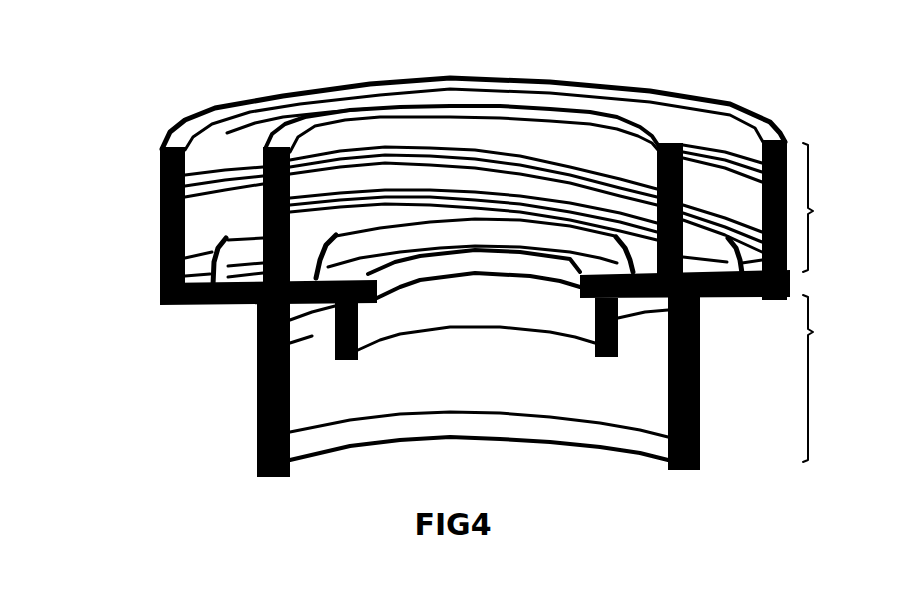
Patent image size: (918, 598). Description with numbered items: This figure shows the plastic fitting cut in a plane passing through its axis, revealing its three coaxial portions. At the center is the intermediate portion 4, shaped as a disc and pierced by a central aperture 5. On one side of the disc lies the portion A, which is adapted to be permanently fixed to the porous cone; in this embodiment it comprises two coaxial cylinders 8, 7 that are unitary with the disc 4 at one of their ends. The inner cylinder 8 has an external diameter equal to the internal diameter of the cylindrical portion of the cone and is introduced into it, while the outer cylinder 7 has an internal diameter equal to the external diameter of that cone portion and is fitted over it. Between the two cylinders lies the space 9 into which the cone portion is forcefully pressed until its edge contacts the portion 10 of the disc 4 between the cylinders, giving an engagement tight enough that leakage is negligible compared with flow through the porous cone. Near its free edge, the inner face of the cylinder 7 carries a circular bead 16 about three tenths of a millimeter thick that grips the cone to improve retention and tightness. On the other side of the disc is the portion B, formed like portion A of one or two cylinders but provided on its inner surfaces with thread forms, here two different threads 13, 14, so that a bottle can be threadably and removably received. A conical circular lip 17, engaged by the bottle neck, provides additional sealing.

The thread 13 is at (203, 160).
The thread 14 is at (300, 156).
The aperture 5 is at (479, 258).
The conical circular lip 17 is at (160, 265).
The intermediate portion 4 is at (163, 302).
The cylinder 8 is at (255, 333).
The space 9 is at (255, 360).
The portion of the disc 10 is at (648, 306).
The cylinder 7 is at (257, 450).
The circular bead 16 is at (332, 449).
The portion A is at (823, 378).
The portion B is at (823, 207).